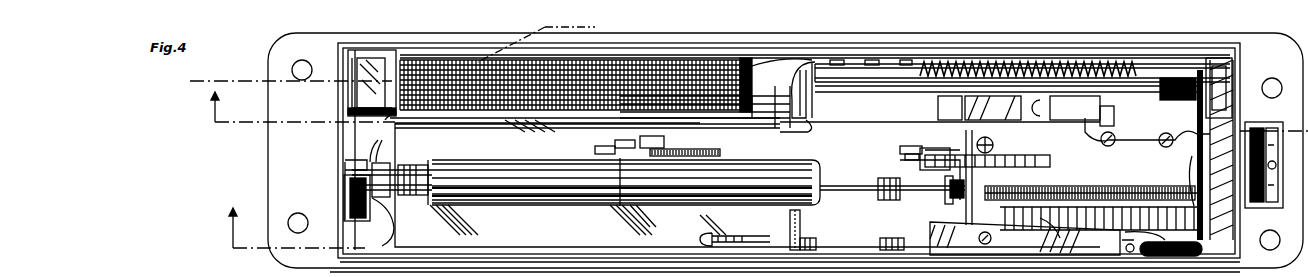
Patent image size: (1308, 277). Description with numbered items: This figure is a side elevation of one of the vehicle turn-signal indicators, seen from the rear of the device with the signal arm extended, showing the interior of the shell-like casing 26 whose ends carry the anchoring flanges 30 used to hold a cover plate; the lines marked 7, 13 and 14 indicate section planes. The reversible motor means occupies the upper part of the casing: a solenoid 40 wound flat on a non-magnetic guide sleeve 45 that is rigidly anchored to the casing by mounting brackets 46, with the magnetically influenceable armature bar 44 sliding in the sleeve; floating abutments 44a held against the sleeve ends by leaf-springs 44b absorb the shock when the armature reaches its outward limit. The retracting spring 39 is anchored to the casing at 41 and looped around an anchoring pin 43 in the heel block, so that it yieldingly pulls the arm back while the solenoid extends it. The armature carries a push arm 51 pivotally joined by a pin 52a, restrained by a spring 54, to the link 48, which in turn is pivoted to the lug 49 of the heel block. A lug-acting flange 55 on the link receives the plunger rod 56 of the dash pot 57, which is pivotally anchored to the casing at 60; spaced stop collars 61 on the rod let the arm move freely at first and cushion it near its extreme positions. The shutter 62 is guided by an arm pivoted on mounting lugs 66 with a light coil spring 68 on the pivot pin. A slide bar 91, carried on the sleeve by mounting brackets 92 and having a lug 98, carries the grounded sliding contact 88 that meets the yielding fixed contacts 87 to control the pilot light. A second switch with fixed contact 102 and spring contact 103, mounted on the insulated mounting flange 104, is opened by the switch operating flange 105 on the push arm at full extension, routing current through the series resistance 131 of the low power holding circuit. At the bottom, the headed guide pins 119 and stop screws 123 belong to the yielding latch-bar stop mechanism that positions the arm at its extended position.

The section line 7 is at (289, 233).
The section line / bracket 13 is at (743, 150).
The section line 14 is at (386, 53).
The casing 26 is at (1020, 42).
The anchoring flange 30 is at (272, 176).
The spring 39 is at (1172, 186).
The solenoid 40 is at (470, 62).
The spring anchor 41 is at (1186, 172).
The anchoring pin 43 is at (1093, 172).
The armature bar 44 is at (906, 62).
The abutment 44a is at (360, 112).
The leaf-spring 44b is at (357, 88).
The guide sleeve 45 is at (1184, 76).
The mounting bracket 46 is at (1222, 58).
The link 48 is at (888, 138).
The lug 49 is at (1042, 146).
The push arm 51 is at (614, 138).
The pin 52a is at (600, 208).
The spring 54 is at (686, 198).
The lug-acting flange 55 is at (884, 166).
The plunger rod 56 is at (838, 192).
The dash pot 57 is at (556, 206).
The dash pot pivot anchor 60 is at (390, 166).
The stop collar 61 is at (894, 200).
The shutter 62 is at (747, 185).
The mounting lug 66 is at (336, 232).
The coil spring 68 is at (389, 212).
The fixed contact 87 is at (1156, 140).
The sliding contact 88 is at (1134, 134).
The slide bar 91 is at (1098, 150).
The mounting bracket 92 is at (940, 109).
The slide bar lug 98 is at (1112, 112).
The fixed contact 102 is at (818, 60).
The spring contact 103 is at (796, 58).
The mounting flange 104 is at (838, 122).
The switch operating flange 105 is at (818, 138).
The guide pin 119 is at (812, 238).
The stop screw 123 is at (772, 236).
The series resistance 131 is at (1086, 58).